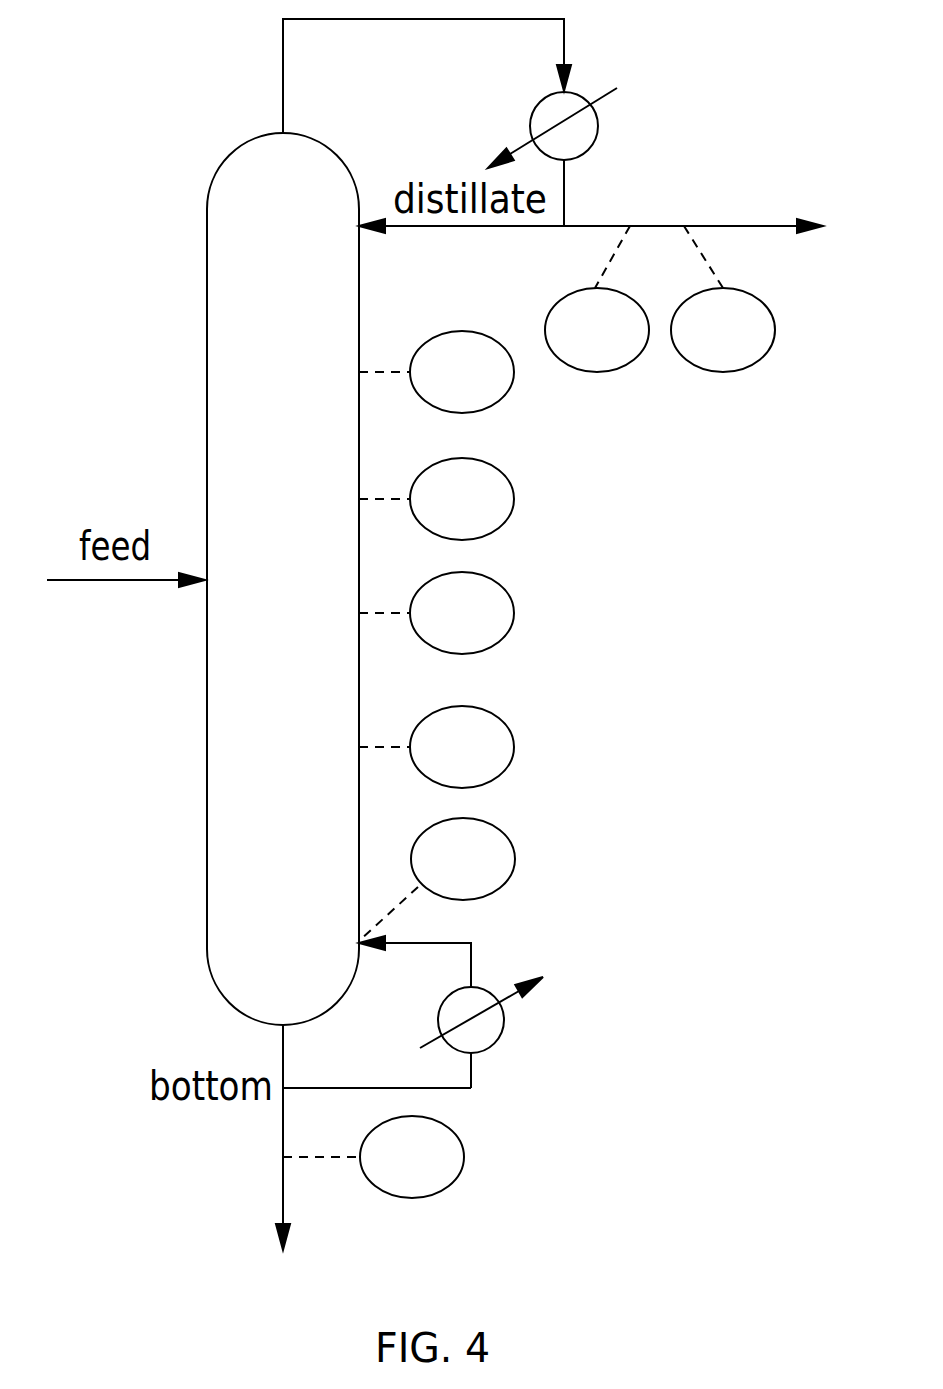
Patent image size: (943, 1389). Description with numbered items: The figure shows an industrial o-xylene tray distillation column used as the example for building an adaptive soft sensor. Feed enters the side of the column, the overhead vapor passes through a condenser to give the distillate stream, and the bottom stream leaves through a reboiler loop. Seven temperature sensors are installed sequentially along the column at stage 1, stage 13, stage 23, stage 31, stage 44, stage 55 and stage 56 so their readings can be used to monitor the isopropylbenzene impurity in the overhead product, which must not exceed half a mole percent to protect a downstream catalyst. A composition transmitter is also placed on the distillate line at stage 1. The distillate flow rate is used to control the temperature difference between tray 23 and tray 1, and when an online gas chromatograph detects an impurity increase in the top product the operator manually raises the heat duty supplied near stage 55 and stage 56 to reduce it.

The stage 1 is at (591, 273).
The stage 13 is at (412, 372).
The stage 23 is at (412, 499).
The stage 31 is at (412, 613).
The stage 44 is at (412, 747).
The stage 55 is at (413, 953).
The stage 56 is at (348, 1157).